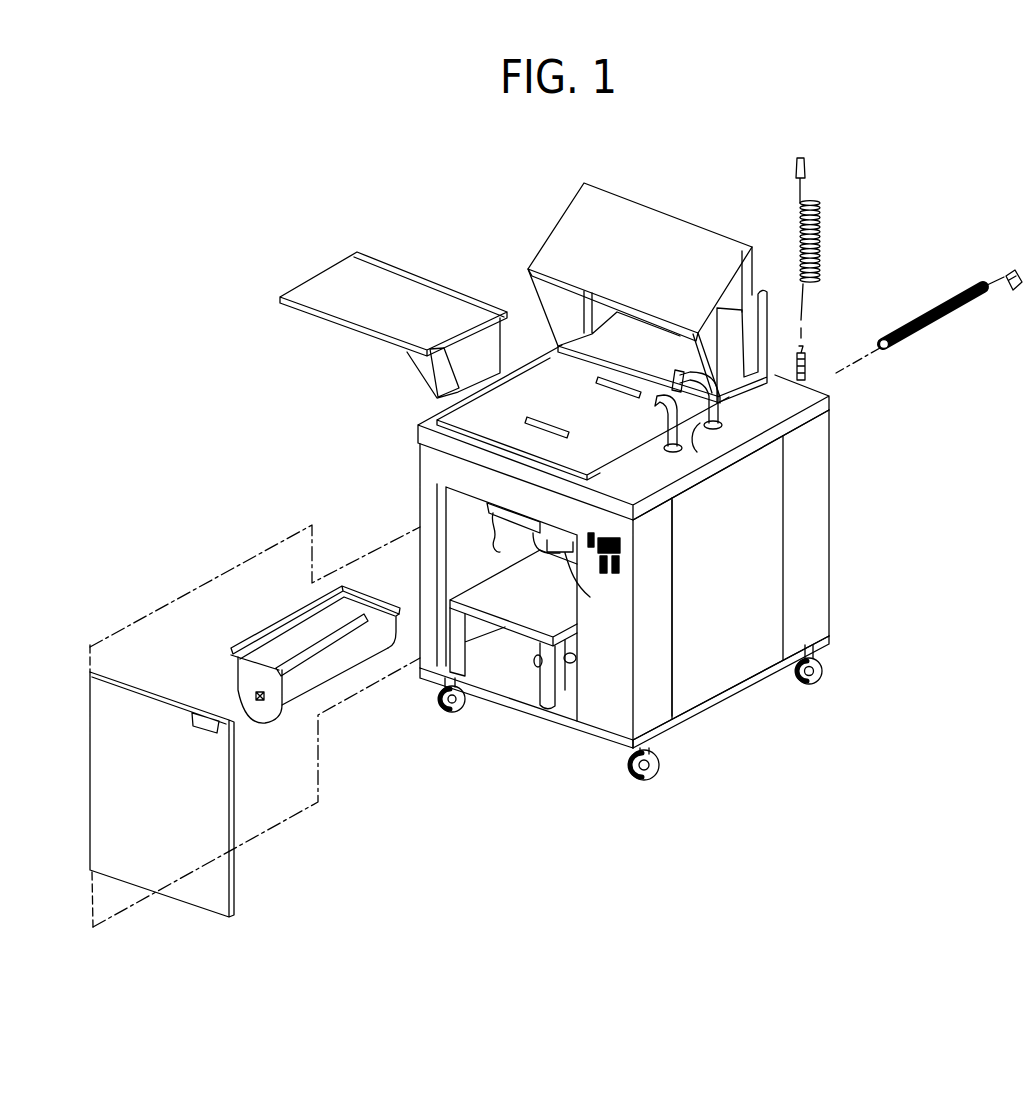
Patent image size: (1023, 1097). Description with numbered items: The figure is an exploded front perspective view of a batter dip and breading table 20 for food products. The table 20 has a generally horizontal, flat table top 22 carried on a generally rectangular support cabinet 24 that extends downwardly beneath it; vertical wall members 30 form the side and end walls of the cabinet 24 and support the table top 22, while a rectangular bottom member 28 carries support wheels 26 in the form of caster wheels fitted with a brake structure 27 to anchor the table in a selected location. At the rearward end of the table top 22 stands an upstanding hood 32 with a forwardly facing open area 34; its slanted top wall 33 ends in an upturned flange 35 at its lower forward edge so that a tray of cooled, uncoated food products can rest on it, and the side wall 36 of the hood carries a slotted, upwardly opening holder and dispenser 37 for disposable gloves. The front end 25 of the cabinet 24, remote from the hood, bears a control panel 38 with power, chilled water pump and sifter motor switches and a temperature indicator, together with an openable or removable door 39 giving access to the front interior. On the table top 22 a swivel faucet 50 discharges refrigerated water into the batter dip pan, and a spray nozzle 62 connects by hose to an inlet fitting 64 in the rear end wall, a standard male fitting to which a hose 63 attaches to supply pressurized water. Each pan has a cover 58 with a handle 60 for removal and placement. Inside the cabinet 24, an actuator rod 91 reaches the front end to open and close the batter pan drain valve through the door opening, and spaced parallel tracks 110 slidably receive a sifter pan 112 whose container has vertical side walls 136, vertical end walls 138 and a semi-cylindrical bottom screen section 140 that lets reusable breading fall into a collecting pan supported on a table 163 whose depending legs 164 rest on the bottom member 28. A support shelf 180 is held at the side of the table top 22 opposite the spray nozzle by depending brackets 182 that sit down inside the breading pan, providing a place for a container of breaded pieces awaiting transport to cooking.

The batter dip and breading table 20 is at (390, 470).
The table top 22 is at (823, 397).
The support cabinet 24 is at (844, 475).
The front end 25 is at (600, 722).
The support wheels 26 is at (822, 672).
The brake structure 27 is at (660, 758).
The bottom member 28 is at (745, 688).
The vertical wall members 30 is at (822, 587).
The hood 32 is at (694, 206).
The slanted top wall 33 is at (632, 222).
The open area 34 is at (565, 288).
The upturned flange 35 is at (529, 265).
The side wall 36 is at (744, 277).
The holder and dispenser 37 is at (768, 350).
The control panel 38 is at (639, 545).
The door 39 is at (103, 772).
The swivel faucet 50 is at (705, 400).
The cover 58 is at (420, 428).
The handle 60 is at (597, 388).
The spray nozzle 62 is at (669, 432).
The hose 63 is at (826, 221).
The inlet fitting 64 is at (806, 360).
The actuator rod 91 is at (590, 596).
The tracks 110 is at (508, 549).
The sifter pan 112 is at (298, 596).
The side walls 136 is at (365, 648).
The end walls 138 is at (247, 681).
The bottom screen section 140 is at (297, 704).
The table 163 is at (537, 612).
The legs 164 is at (458, 660).
The support shelf 180 is at (330, 285).
The brackets 182 is at (457, 358).